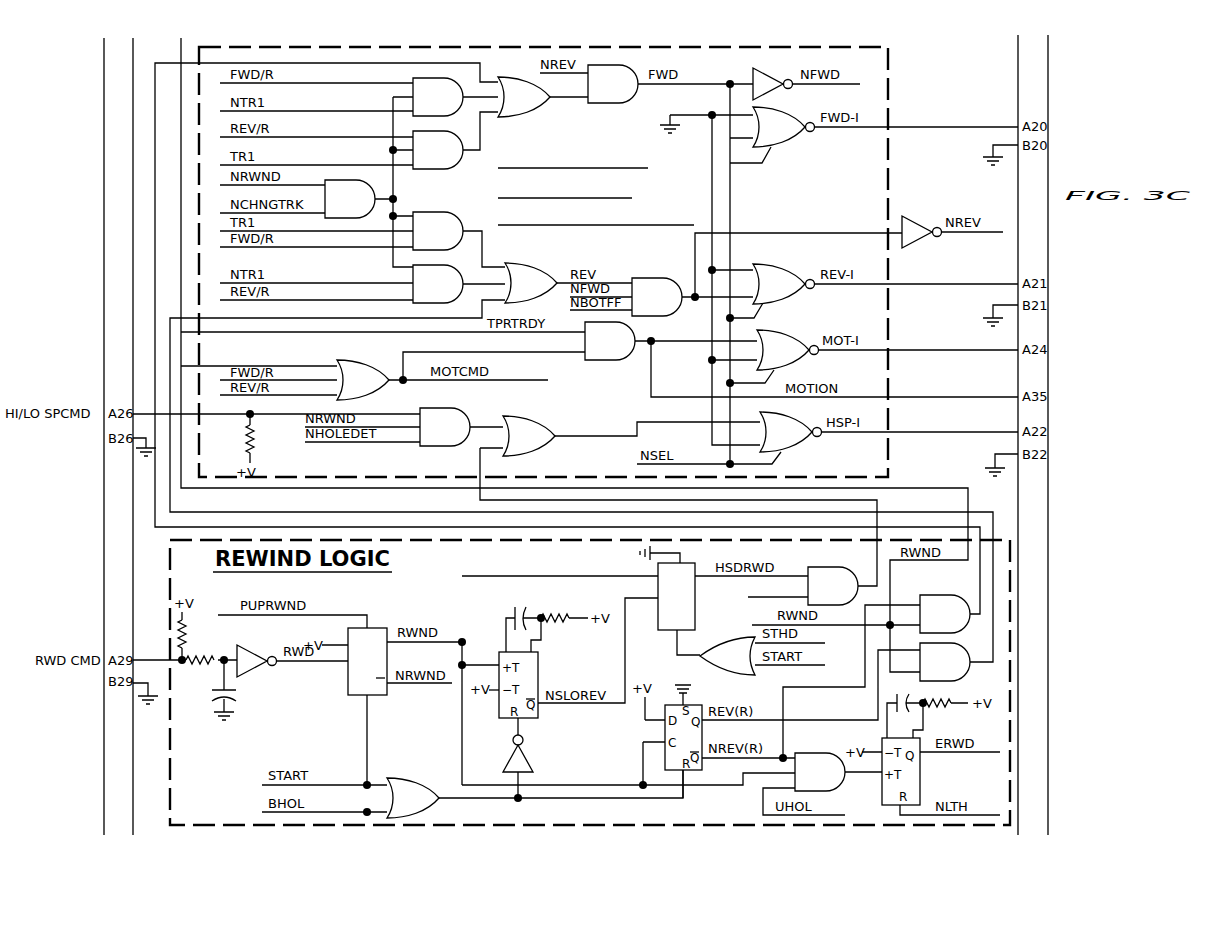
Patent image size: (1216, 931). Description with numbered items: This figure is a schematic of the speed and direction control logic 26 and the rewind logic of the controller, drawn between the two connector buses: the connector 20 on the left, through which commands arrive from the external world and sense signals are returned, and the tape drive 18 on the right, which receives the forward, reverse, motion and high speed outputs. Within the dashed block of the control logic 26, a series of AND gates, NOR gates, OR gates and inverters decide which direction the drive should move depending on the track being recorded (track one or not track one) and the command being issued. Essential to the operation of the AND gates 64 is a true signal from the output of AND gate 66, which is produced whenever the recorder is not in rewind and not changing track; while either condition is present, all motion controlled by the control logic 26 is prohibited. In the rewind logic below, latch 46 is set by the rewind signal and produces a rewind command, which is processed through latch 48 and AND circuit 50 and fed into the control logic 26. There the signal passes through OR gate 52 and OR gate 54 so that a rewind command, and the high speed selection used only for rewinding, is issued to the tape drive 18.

The tape drive 18 is at (1036, 50).
The connector 20 is at (108, 53).
The speed and direction control logic 26 is at (888, 92).
The latch 46 is at (350, 684).
The latch 48 is at (688, 603).
The AND circuit 50 is at (833, 577).
The OR gate 52 is at (534, 433).
The OR gate 54 is at (790, 436).
The AND gates 64 is at (442, 106).
The AND gate 66 is at (354, 208).